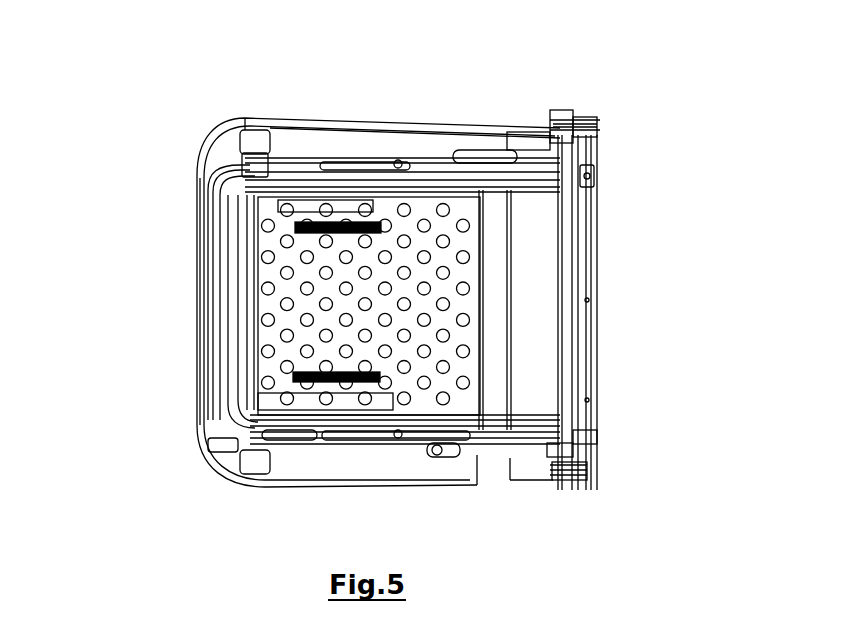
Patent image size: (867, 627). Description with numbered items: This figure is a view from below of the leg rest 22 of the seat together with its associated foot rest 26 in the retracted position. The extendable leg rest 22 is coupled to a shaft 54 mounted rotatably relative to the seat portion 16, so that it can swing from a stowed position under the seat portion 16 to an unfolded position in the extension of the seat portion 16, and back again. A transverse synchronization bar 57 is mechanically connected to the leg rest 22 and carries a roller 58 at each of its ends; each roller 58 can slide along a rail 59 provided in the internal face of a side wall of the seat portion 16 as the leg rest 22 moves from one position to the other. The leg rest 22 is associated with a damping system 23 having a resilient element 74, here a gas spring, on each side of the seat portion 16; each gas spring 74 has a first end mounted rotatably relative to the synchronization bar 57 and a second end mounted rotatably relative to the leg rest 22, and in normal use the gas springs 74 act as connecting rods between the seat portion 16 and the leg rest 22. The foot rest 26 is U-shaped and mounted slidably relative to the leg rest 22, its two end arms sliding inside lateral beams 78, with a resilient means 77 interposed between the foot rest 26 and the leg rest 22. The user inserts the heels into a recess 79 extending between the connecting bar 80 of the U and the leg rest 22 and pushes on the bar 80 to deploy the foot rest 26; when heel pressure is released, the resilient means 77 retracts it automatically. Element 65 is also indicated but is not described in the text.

The seat portion 16 is at (545, 298).
The leg rest 22 is at (325, 160).
The damping system 23 is at (497, 136).
The foot rest 26 is at (209, 237).
The shaft 54 is at (583, 206).
The transverse bar 57 is at (575, 353).
The roller 58 is at (568, 128).
The rail 59 is at (590, 118).
The side tube 65 is at (262, 296).
The resilient element 74 is at (470, 148).
The resilient means 77 is at (470, 328).
The lateral beams 78 is at (355, 165).
The recess 79 is at (229, 343).
The connecting bar 80 is at (207, 257).